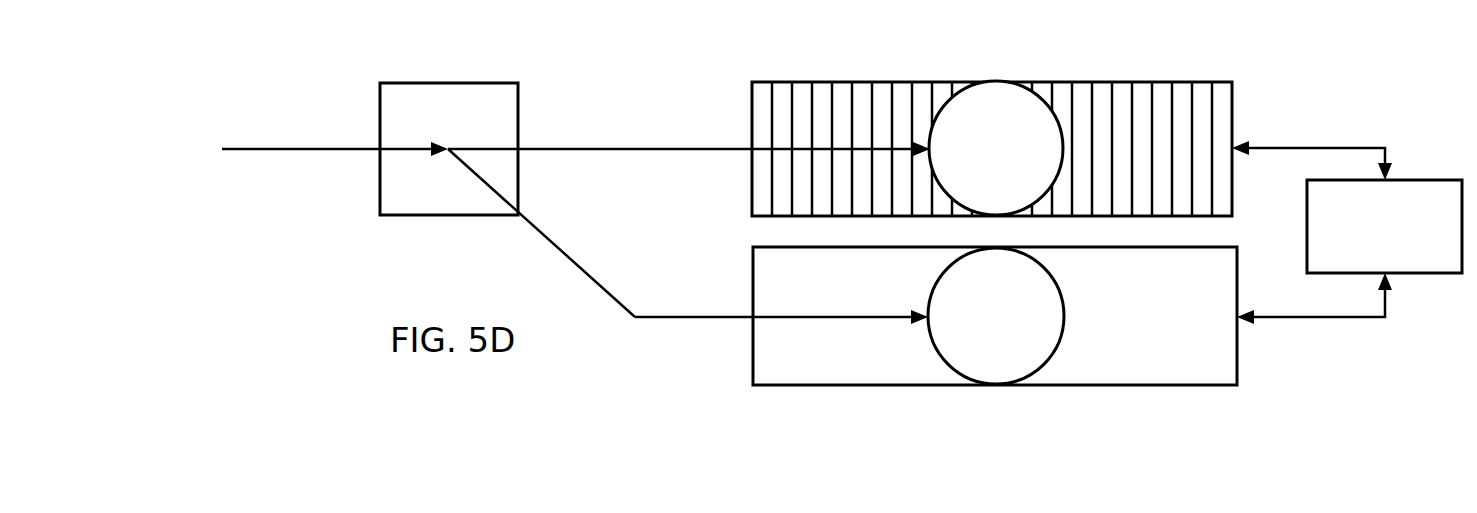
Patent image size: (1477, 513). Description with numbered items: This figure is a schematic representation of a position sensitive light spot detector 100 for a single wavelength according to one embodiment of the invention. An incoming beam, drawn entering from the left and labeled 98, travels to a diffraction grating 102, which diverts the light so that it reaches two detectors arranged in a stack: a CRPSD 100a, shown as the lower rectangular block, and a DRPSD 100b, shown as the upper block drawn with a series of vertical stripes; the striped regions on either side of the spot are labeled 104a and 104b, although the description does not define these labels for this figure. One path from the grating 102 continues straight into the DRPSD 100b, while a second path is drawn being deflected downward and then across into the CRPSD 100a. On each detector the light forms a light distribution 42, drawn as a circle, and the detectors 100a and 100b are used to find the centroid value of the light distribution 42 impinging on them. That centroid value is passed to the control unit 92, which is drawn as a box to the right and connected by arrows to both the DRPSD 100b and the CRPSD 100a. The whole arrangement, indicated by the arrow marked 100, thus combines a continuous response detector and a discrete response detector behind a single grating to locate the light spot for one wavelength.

The light beam 98 is at (272, 0).
The diffraction grating 102 is at (482, 83).
The control unit 92 is at (1422, 180).
The first detector portion 104a is at (872, 108).
The second detector portion 104b is at (1102, 108).
The DRPSD 100b is at (1181, 82).
The CRPSD 100a is at (1237, 350).
The light distribution 42 is at (1019, 165).
The position sensitive light spot detector 100 is at (330, 300).